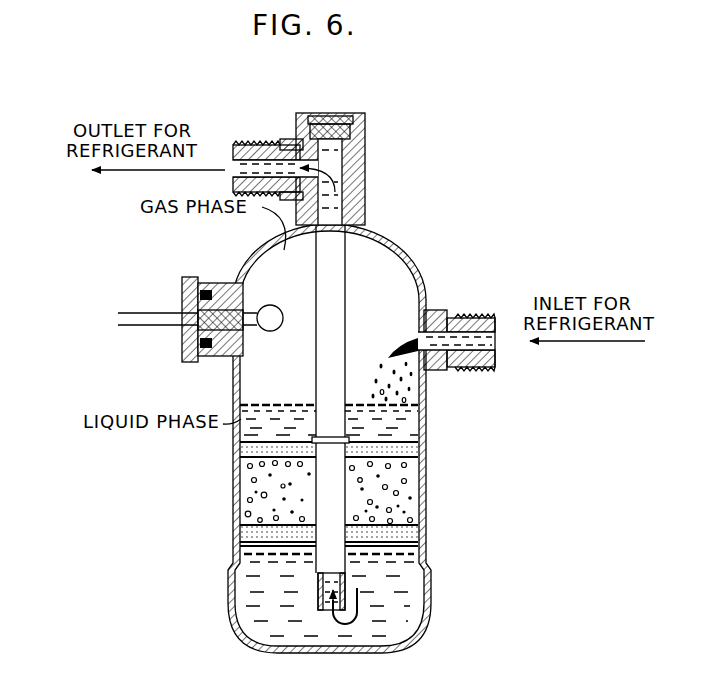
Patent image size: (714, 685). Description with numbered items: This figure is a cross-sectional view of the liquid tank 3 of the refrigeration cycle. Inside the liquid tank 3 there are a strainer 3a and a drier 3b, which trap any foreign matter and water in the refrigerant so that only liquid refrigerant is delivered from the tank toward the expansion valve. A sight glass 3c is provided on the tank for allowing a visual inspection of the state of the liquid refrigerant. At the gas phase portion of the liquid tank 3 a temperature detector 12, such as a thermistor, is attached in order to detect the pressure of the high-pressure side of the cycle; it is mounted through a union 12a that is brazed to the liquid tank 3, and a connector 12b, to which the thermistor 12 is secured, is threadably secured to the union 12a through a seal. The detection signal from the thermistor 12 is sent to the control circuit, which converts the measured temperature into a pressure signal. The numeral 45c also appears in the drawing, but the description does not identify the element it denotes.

The liquid tank 3 is at (402, 246).
The strainer 3a is at (242, 449).
The drier 3b is at (388, 497).
The sight glass 3c is at (330, 113).
The temperature detector 12 is at (200, 319).
The union 12a is at (207, 283).
The connector 12b is at (182, 295).
The sight glass sensing rod 45c is at (206, 357).